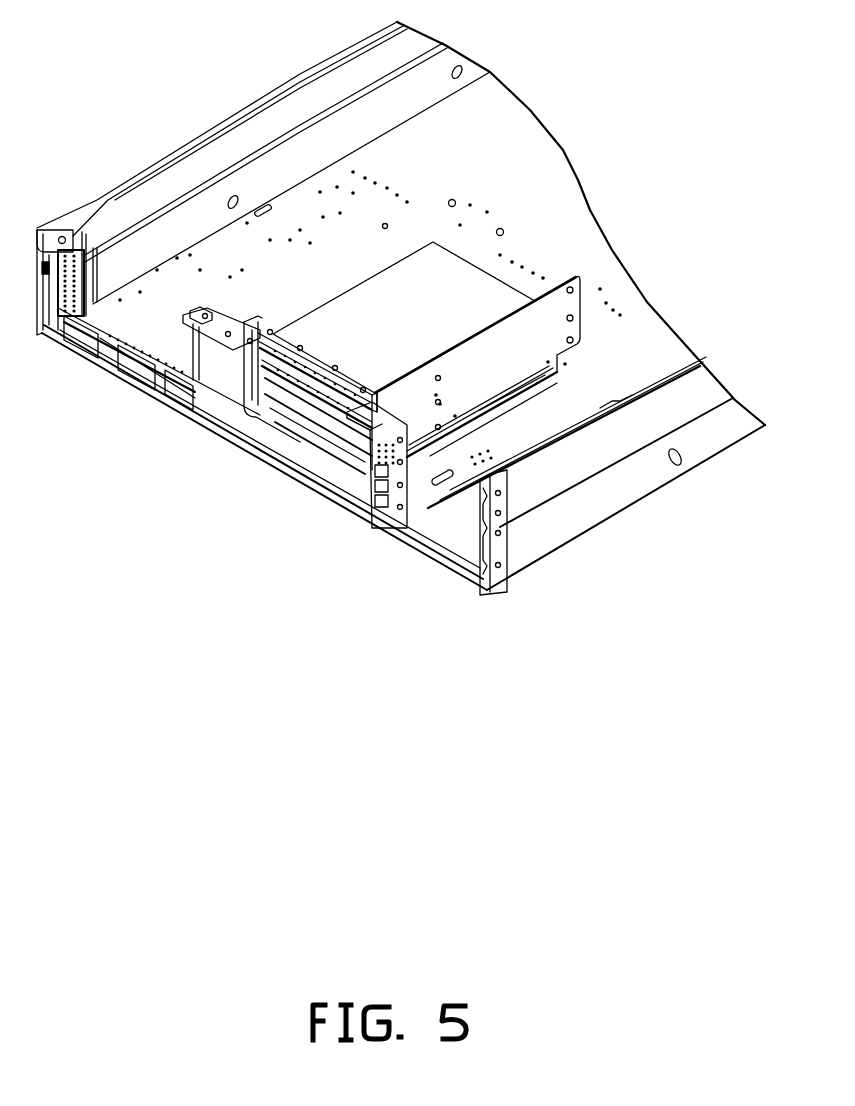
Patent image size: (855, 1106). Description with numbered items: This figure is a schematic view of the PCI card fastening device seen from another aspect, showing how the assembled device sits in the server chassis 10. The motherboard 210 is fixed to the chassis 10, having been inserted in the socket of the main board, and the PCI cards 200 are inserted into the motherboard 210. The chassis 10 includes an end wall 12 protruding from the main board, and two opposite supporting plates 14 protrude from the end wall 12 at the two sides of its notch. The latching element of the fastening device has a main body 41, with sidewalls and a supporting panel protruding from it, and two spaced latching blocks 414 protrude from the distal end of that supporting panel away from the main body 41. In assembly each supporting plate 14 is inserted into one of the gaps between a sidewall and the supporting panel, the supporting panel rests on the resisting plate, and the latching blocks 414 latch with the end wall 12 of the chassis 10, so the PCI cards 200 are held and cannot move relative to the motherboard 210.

The chassis 10 is at (555, 237).
The peripheral component interconnect card 200 is at (443, 272).
The motherboard 210 is at (560, 330).
The supporting plate 14 is at (198, 392).
The main body 41 is at (285, 393).
The latching block 414 is at (340, 470).
The end wall 12 is at (368, 483).